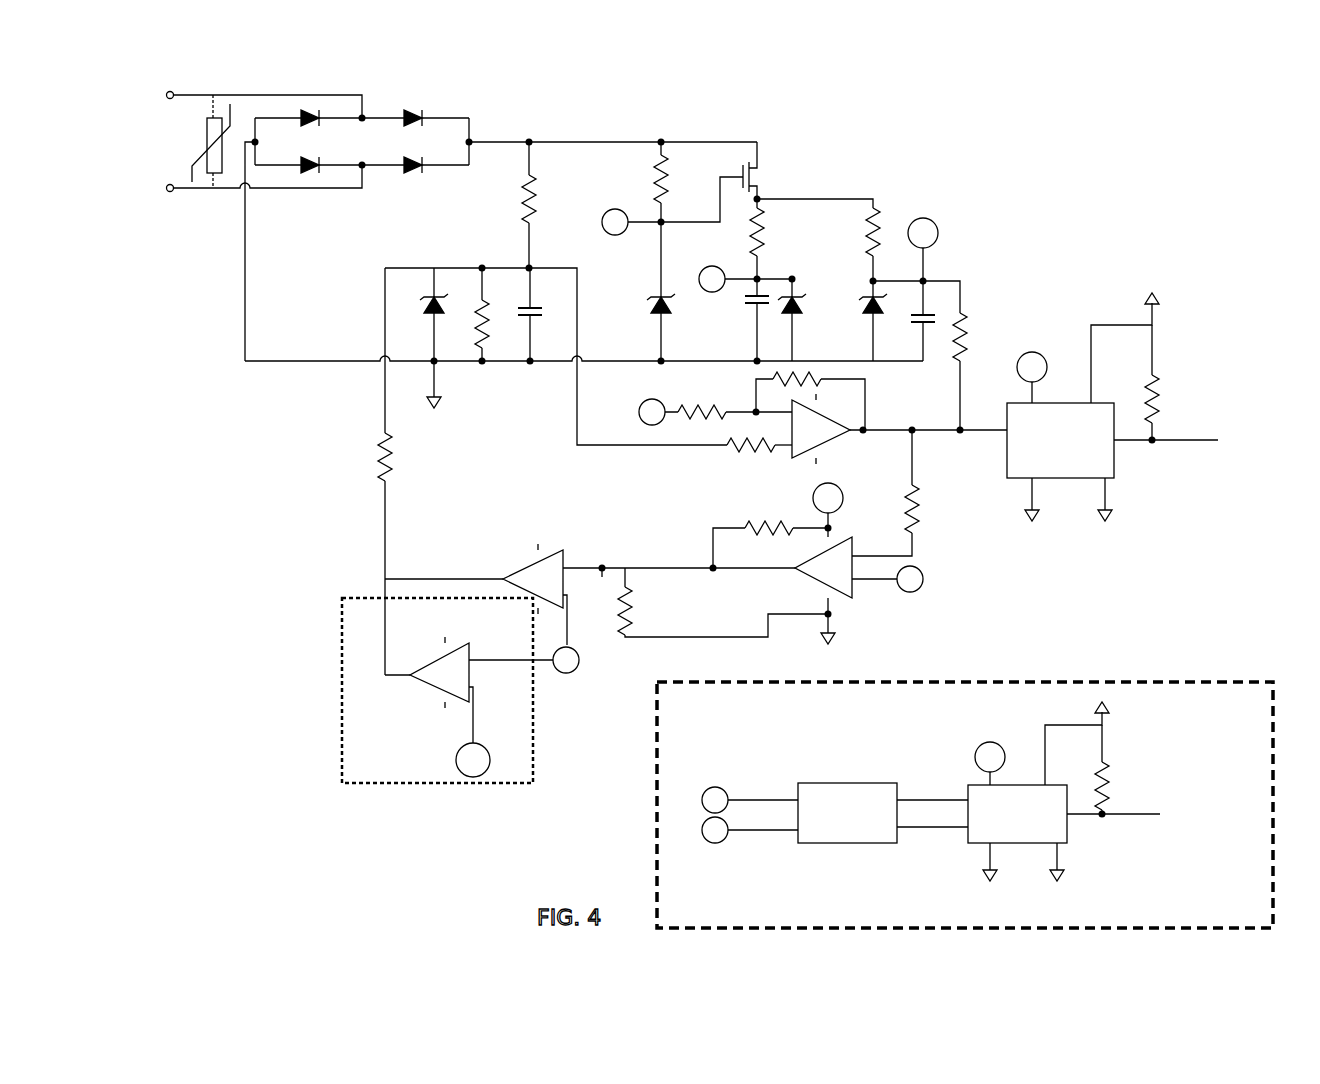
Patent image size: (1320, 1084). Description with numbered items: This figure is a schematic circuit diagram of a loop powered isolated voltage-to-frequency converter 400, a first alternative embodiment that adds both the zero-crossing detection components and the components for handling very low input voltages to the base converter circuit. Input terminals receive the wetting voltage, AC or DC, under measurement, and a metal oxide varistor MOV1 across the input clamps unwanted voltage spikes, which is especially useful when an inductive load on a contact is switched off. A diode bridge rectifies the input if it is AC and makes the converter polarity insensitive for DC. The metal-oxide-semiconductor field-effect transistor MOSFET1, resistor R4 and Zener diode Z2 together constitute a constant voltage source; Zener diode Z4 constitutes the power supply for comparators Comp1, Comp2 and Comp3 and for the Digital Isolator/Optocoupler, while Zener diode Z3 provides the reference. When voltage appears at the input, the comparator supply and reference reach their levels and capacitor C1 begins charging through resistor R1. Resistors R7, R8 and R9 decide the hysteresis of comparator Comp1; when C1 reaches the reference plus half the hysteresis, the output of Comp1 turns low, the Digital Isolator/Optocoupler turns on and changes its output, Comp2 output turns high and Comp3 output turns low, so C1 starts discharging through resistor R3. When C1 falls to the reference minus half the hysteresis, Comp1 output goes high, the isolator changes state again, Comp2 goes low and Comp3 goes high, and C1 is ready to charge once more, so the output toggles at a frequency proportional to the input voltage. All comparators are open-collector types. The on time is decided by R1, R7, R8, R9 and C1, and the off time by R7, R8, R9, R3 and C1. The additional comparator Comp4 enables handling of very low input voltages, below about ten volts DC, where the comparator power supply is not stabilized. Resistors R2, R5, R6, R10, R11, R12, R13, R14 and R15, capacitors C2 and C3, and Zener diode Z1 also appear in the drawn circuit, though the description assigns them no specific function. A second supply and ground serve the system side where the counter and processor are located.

The loop powered isolated voltage-to-frequency converter 400 is at (186, 545).
The metal oxide varistor MOV1 is at (226, 128).
The metal-oxide-semiconductor field-effect transistor MOSFET1 is at (789, 172).
The resistor R1 is at (518, 205).
The resistor R2 is at (495, 315).
The resistor R3 is at (366, 471).
The resistor R4 is at (648, 182).
The resistor R5 is at (776, 241).
The resistor R6 is at (862, 246).
The resistor R7 is at (971, 373).
The resistor R8 is at (810, 401).
The resistor R9 is at (728, 404).
The resistor R10 is at (759, 455).
The resistor R11 is at (769, 538).
The resistor R12 is at (723, 602).
The resistor R13 is at (901, 493).
The resistor R14 is at (1137, 384).
The resistor R15 is at (1087, 771).
The capacitor C1 is at (540, 316).
The capacitor C2 is at (924, 333).
The capacitor C3 is at (744, 322).
The zener diode Z1 is at (426, 338).
The Zener diode Z2 is at (647, 293).
The Zener diode Z3 is at (808, 320).
The Zener diode Z4 is at (887, 321).
The comparator Comp1 is at (821, 429).
The comparator Comp2 is at (823, 567).
The comparator Comp3 is at (533, 579).
The comparator Comp4 is at (439, 672).